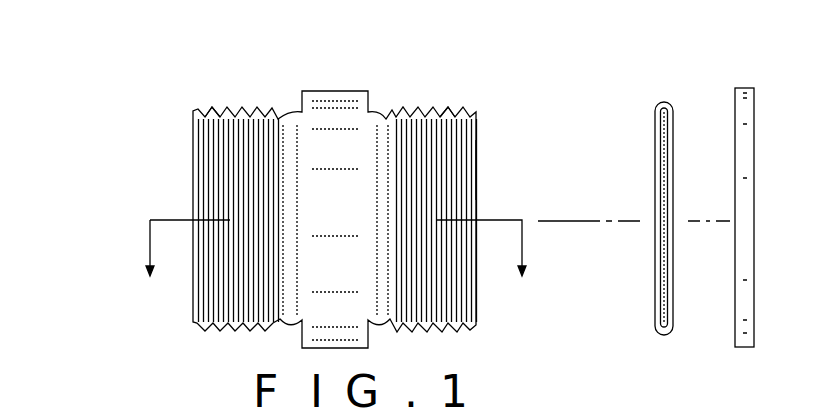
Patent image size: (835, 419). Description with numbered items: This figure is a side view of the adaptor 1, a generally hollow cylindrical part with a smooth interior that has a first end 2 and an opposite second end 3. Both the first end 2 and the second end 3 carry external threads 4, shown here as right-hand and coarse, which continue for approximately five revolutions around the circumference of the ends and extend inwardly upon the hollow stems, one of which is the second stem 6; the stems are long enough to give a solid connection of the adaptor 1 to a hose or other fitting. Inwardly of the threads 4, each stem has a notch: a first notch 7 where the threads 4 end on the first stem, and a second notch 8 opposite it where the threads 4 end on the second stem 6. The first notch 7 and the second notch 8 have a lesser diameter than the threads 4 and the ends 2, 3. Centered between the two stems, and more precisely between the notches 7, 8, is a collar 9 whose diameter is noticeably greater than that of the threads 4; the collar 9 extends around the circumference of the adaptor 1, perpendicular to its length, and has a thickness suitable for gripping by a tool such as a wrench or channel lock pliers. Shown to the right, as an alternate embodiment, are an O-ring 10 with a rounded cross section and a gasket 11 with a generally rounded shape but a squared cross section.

The adaptor 1 is at (128, 102).
The first end 2 is at (186, 172).
The second end 3 is at (486, 171).
The external threads 4 is at (212, 106).
The second stem 6 is at (237, 76).
The first notch 7 is at (286, 110).
The second notch 8 is at (388, 110).
The collar 9 is at (330, 90).
The O-ring 10 is at (663, 100).
The gasket 11 is at (744, 87).